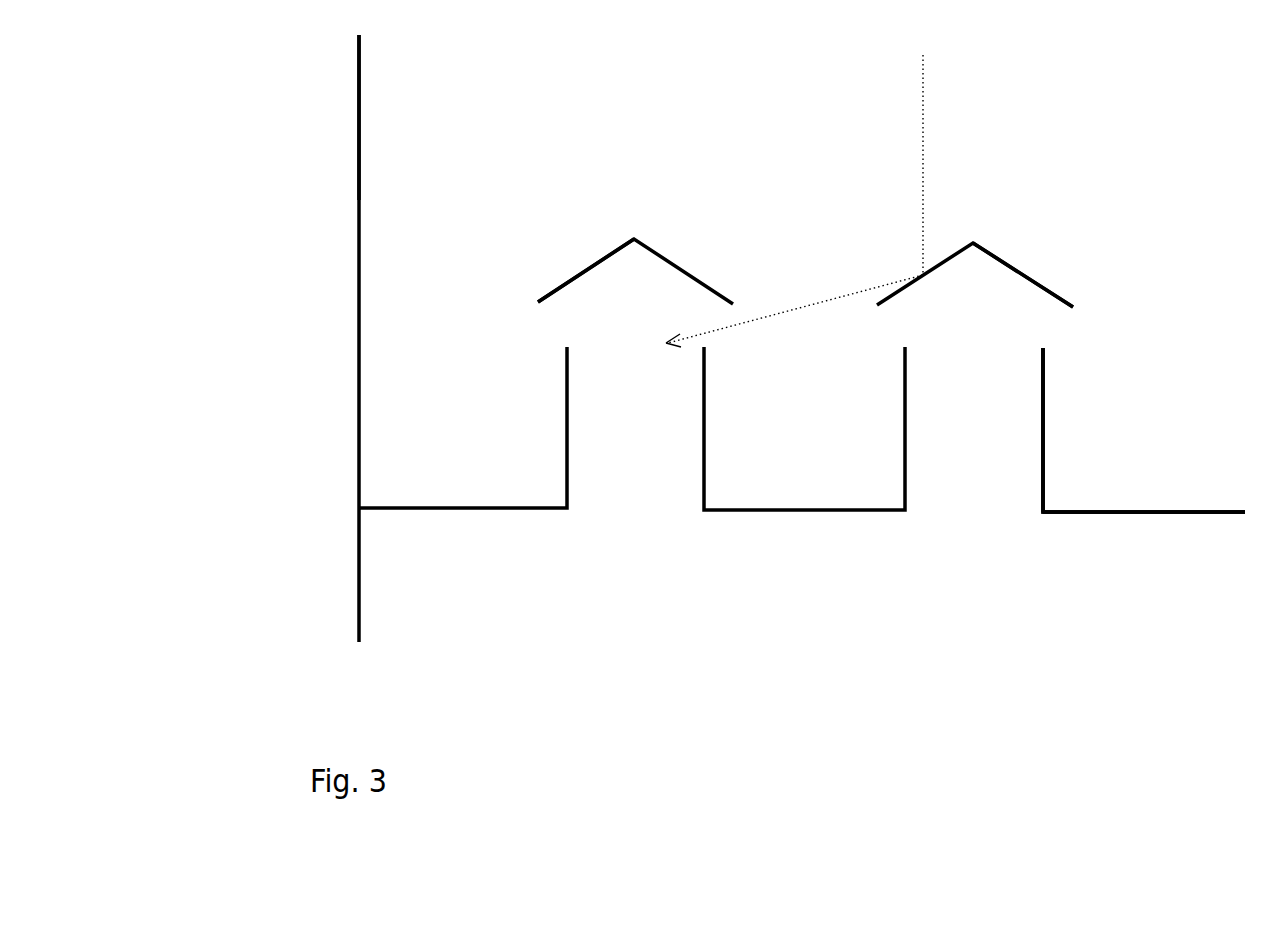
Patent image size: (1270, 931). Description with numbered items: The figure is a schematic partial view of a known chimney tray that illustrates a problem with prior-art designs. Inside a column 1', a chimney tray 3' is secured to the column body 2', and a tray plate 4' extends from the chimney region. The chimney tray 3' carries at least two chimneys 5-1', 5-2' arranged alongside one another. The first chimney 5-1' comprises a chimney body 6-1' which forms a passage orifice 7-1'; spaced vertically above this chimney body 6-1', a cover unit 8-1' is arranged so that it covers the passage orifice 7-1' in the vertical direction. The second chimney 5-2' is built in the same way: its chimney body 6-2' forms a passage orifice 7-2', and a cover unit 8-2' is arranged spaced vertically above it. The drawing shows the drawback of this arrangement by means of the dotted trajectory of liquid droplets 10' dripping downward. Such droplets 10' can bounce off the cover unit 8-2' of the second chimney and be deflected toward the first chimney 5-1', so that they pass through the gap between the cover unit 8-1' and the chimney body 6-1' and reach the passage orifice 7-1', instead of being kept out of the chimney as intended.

The column 1' is at (315, 338).
The column body 2' is at (405, 117).
The chimney tray 3' is at (1144, 428).
The bottom wall 4' is at (1144, 550).
The first chimney 5-1' is at (639, 232).
The second chimney 5-2' is at (994, 234).
The chimney body 6-1' is at (777, 456).
The chimney body 6-2' is at (1010, 457).
The passage orifice 7-1' is at (507, 427).
The passage orifice 7-2' is at (1101, 430).
The cover unit 8-1' is at (560, 260).
The cover unit 8-2' is at (1056, 275).
The liquid droplets 10' is at (794, 201).